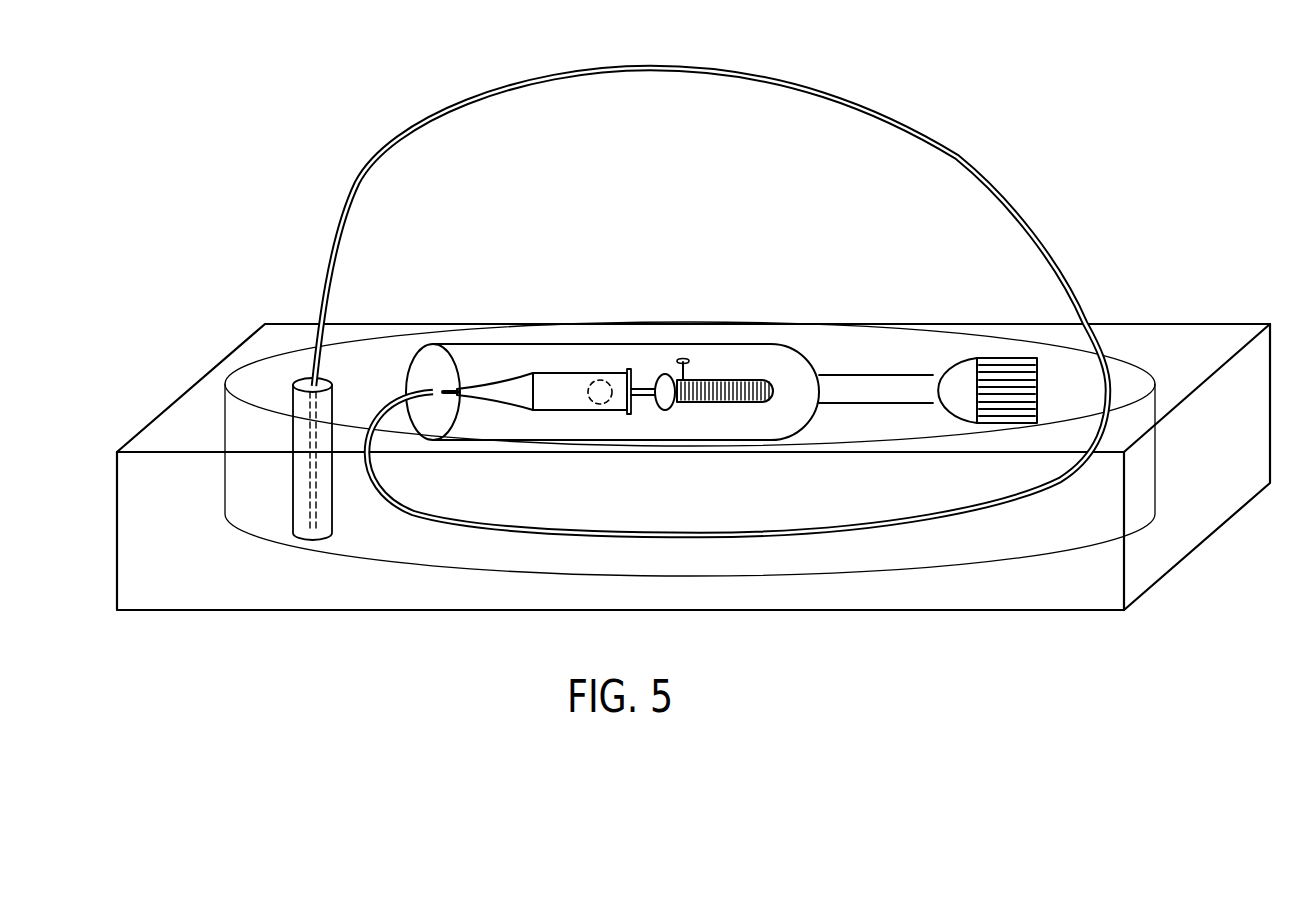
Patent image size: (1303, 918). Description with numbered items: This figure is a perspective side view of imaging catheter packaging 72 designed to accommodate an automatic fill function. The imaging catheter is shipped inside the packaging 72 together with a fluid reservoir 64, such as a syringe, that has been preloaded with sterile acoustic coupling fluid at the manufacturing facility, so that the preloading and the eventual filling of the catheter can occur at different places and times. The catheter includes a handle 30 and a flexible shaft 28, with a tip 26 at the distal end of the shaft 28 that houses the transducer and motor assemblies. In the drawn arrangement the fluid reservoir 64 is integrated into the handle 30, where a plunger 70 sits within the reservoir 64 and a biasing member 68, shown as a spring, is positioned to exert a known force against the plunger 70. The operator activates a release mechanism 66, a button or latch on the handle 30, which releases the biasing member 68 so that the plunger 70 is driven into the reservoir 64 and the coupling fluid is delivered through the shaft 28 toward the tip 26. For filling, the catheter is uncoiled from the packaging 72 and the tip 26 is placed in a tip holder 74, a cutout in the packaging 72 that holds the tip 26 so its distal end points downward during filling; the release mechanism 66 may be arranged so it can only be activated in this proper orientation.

The packaging 72 is at (693, 335).
The flexible shaft 28 is at (960, 159).
The tip holder 74 is at (297, 378).
The tip 26 is at (302, 491).
The handle 30 is at (548, 362).
The fluid reservoir 64 is at (577, 372).
The plunger 70 is at (640, 375).
The release mechanism 66 is at (676, 355).
The biasing member 68 is at (752, 375).